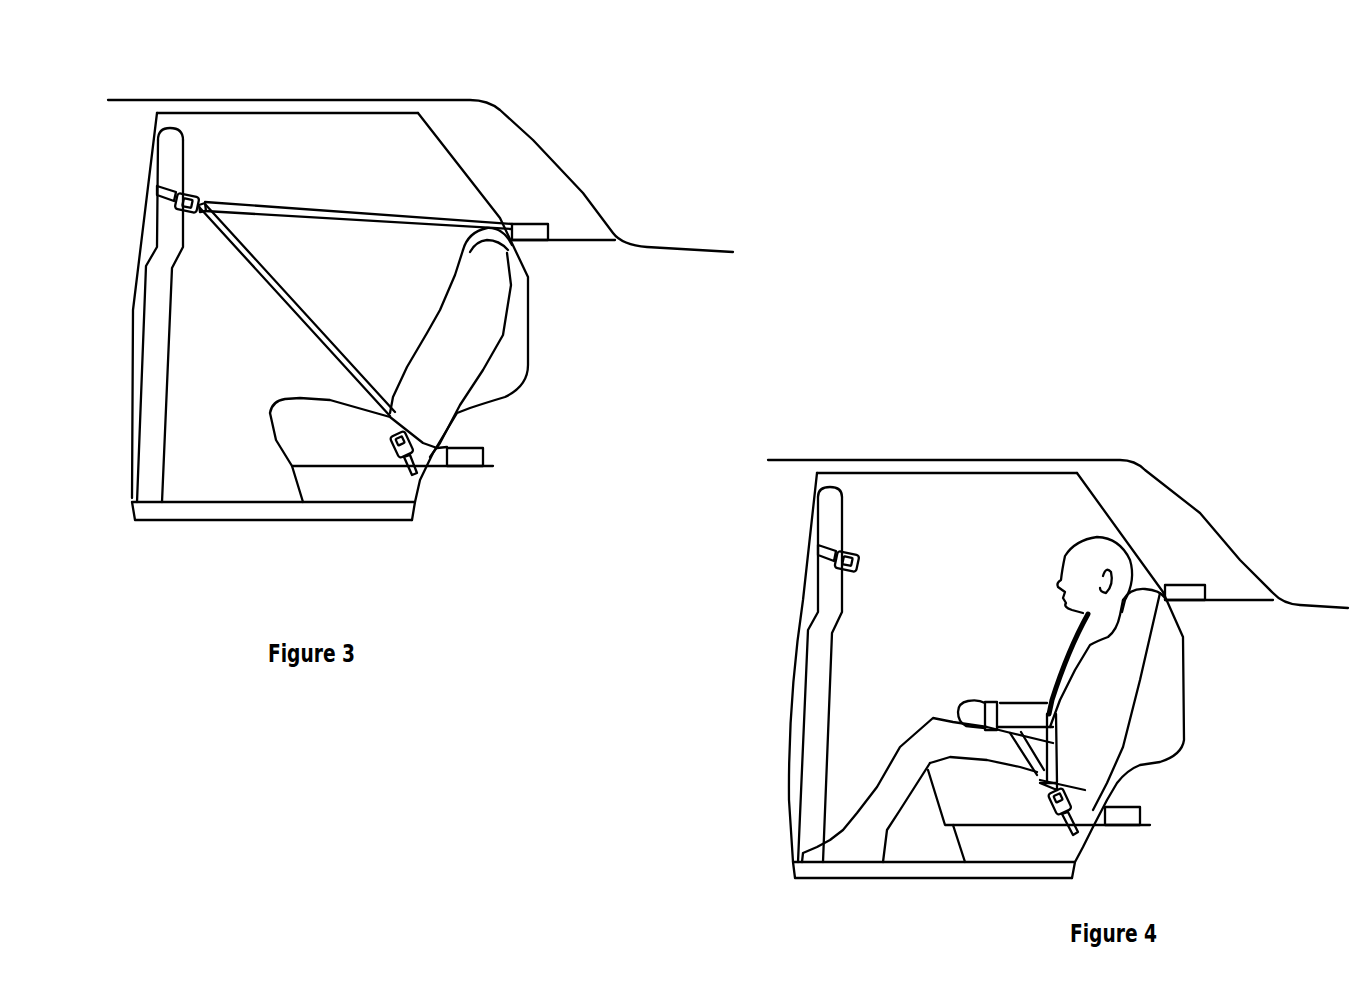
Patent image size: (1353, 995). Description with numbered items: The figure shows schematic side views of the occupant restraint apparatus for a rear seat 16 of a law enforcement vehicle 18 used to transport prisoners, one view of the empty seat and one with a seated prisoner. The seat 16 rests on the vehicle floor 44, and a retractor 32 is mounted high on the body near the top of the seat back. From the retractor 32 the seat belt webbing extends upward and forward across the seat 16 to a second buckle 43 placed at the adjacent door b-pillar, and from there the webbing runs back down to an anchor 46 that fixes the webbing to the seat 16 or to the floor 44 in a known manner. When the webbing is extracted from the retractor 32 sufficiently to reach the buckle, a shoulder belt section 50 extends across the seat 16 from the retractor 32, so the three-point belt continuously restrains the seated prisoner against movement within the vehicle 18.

In FIG. 3, the rear seat 16 is at (490, 318).
In FIG. 4, the rear seat 16 is at (1170, 687).
In FIG. 3, the vehicle 18 is at (487, 125).
In FIG. 4, the vehicle 18 is at (1165, 507).
In FIG. 3, the retractor 32 is at (541, 225).
In FIG. 4, the retractor 32 is at (1205, 585).
In FIG. 3, the second buckle 43 is at (168, 203).
In FIG. 4, the second buckle 43 is at (828, 555).
In FIG. 3, the vehicle floor 44 is at (198, 512).
In FIG. 4, the vehicle floor 44 is at (943, 870).
In FIG. 3, the anchor 46 is at (470, 462).
In FIG. 4, the anchor 46 is at (1125, 822).
In FIG. 3, the shoulder belt section 50 is at (317, 210).